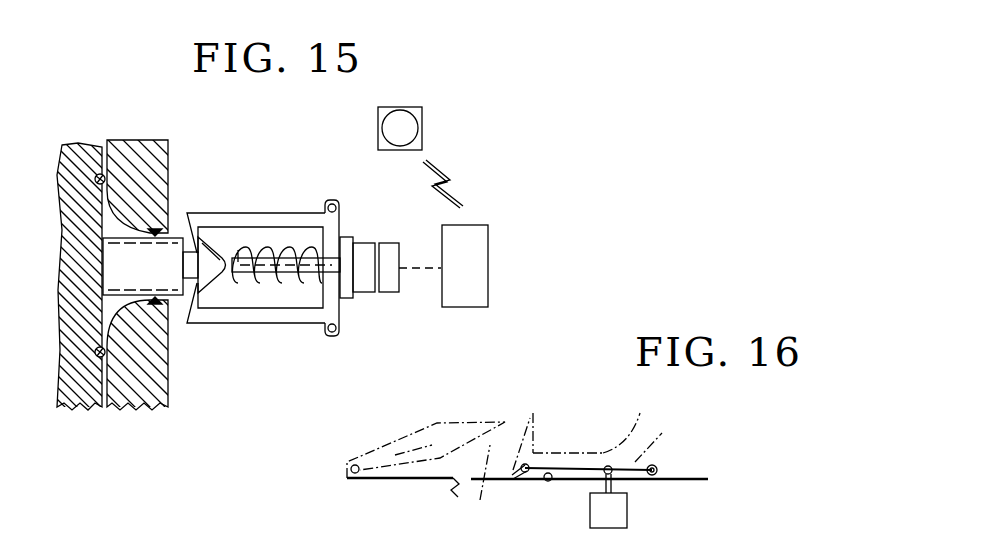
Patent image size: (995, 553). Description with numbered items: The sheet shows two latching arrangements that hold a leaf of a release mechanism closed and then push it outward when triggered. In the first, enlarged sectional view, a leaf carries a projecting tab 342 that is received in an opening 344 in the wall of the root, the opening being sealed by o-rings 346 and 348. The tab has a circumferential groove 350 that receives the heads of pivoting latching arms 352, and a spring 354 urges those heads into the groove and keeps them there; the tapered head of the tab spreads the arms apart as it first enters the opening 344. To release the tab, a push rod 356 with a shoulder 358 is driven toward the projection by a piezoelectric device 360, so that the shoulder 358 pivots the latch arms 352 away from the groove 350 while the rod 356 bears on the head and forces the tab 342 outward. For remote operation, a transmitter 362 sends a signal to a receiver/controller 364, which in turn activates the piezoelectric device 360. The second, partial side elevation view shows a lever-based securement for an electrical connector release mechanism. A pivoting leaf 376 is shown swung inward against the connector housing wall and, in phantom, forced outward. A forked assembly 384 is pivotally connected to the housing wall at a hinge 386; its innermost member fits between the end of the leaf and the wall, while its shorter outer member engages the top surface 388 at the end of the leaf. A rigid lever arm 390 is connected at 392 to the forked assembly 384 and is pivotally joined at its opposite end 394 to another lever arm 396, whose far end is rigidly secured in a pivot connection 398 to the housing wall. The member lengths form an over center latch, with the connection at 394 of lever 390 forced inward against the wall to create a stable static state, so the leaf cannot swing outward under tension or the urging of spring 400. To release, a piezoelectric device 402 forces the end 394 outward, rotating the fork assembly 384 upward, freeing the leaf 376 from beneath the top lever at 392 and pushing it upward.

In FIG. 15, the projecting tab 342 is at (161, 277).
In FIG. 15, the opening 344 is at (155, 230).
In FIG. 15, the o-ring 346 is at (158, 305).
In FIG. 15, the o-ring 348 is at (100, 357).
In FIG. 15, the circumferential groove 350 is at (190, 290).
In FIG. 15, the pivoting latching arm 352 is at (247, 213).
In FIG. 15, the spring 354 is at (271, 258).
In FIG. 15, the push rod 356 is at (278, 275).
In FIG. 15, the shoulder 358 is at (349, 237).
In FIG. 15, the piezoelectric device 360 is at (380, 296).
In FIG. 15, the transmitter 362 is at (424, 129).
In FIG. 15, the receiver/controller 364 is at (490, 240).
In FIG. 16, the pivoting leaf 376 is at (402, 437).
In FIG. 16, the forked assembly 384 is at (486, 442).
In FIG. 16, the hinge 386 is at (548, 482).
In FIG. 16, the top surface 388 is at (466, 458).
In FIG. 16, the rigid lever arm 390 is at (578, 452).
In FIG. 16, the connection 392 is at (520, 455).
In FIG. 16, the opposite end 394 is at (610, 457).
In FIG. 16, the lever arm 396 is at (637, 466).
In FIG. 16, the pivot connection 398 is at (658, 470).
In FIG. 16, the spring 400 is at (455, 490).
In FIG. 16, the piezoelectric device 402 is at (628, 518).